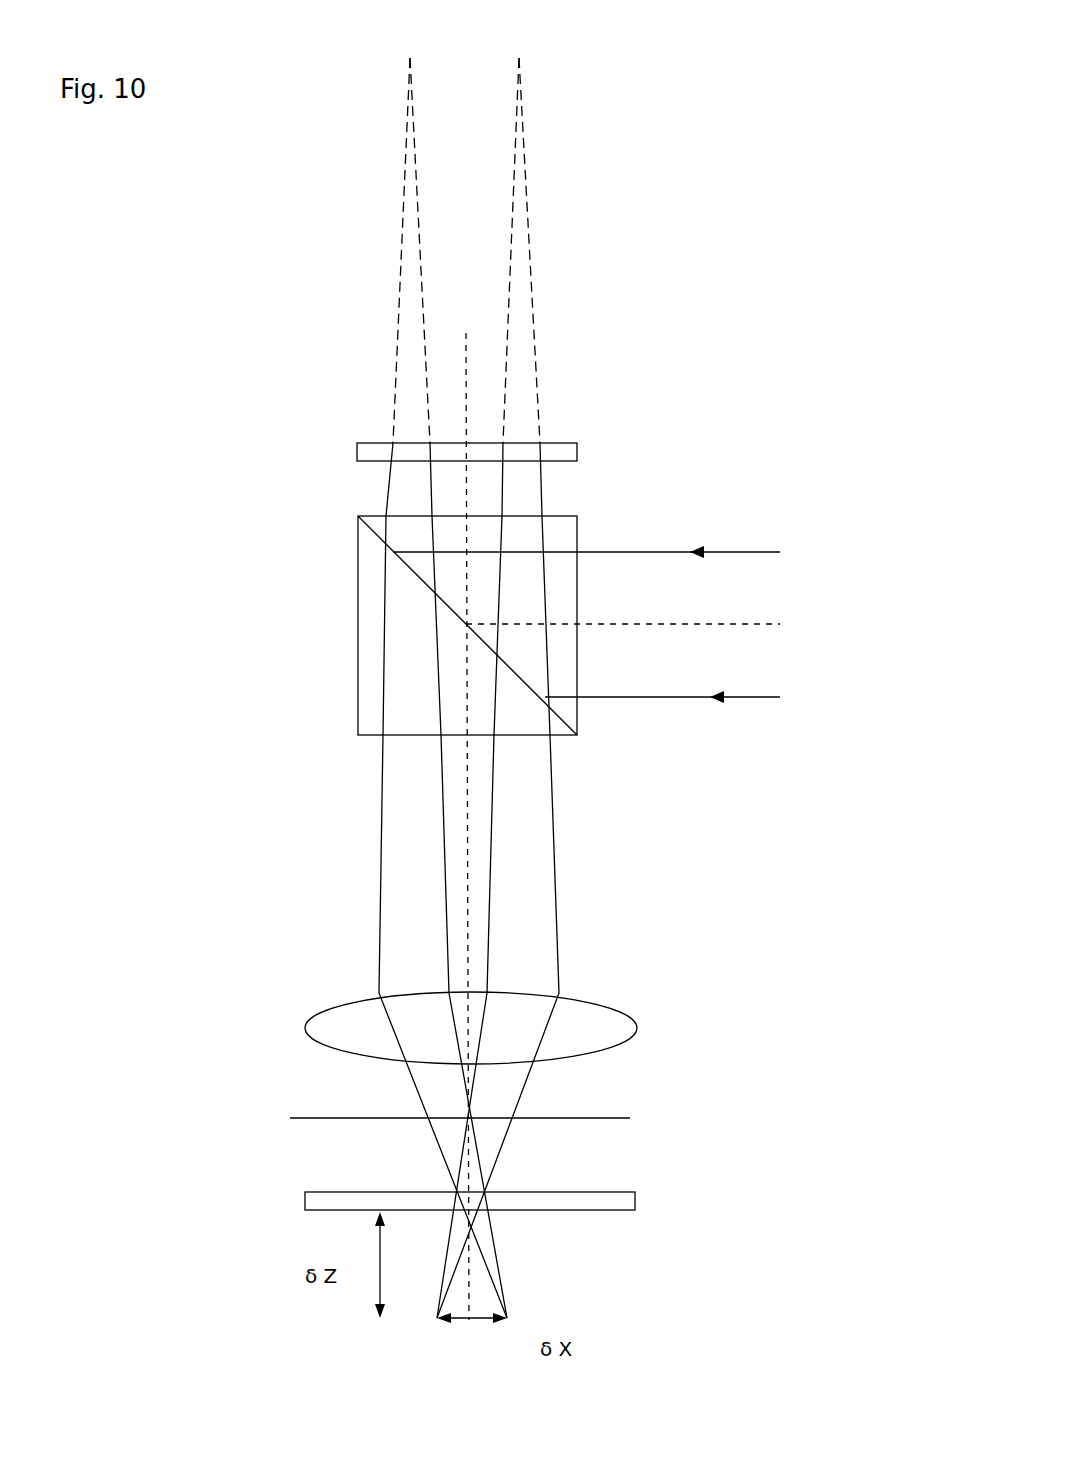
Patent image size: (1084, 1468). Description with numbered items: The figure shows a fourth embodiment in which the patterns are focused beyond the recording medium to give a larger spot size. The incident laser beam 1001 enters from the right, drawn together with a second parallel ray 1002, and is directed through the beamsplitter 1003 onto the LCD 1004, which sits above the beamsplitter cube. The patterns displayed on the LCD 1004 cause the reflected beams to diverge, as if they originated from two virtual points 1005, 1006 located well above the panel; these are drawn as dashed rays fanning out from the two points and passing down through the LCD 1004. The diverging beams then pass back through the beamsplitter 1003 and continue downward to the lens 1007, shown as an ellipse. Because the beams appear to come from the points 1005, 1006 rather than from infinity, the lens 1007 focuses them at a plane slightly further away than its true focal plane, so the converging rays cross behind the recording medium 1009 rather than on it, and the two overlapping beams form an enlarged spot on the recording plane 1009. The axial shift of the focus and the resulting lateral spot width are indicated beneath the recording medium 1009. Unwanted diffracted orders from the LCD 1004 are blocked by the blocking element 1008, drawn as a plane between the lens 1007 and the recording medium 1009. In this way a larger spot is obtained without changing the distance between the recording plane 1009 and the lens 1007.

The incident laser beam 1001 is at (740, 656).
The incident light beam 1002 is at (586, 526).
The beamsplitter 1003 is at (362, 630).
The LCD 1004 is at (580, 451).
The virtual origin point 1005 is at (400, 58).
The virtual origin point 1006 is at (528, 58).
The lens 1007 is at (638, 1022).
The blocking element 1008 is at (628, 1118).
The recording medium 1009 is at (635, 1200).